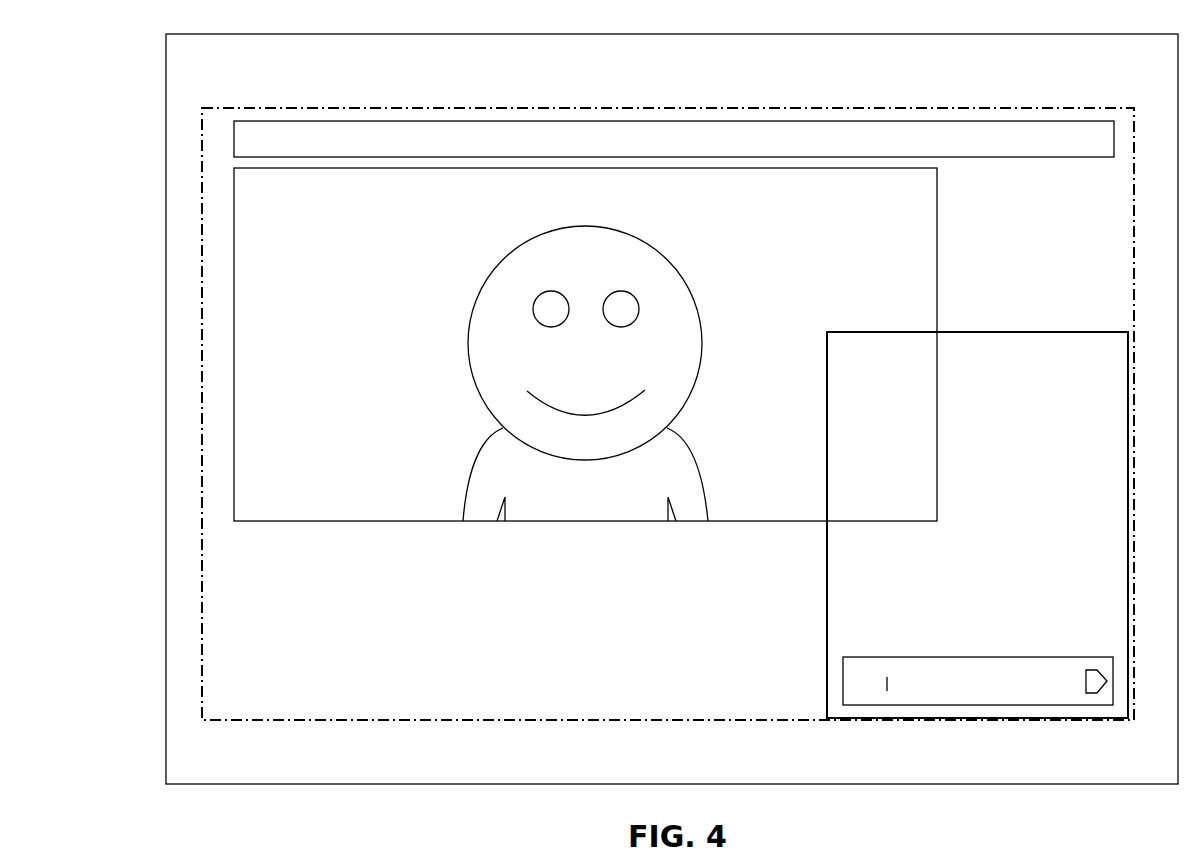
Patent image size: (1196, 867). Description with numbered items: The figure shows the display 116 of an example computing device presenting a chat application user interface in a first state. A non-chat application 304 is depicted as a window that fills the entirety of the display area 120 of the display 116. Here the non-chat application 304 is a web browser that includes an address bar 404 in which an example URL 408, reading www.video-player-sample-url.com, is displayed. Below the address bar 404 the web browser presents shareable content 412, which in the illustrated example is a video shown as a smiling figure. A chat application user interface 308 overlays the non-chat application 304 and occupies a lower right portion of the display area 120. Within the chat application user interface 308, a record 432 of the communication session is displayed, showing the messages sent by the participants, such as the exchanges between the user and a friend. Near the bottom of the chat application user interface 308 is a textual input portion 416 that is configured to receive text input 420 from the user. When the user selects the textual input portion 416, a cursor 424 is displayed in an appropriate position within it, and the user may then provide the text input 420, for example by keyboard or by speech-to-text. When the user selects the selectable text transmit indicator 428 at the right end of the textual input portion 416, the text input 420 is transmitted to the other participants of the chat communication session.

The display 116 is at (1140, 784).
The display area 120 is at (668, 413).
The non-chat application 304 is at (775, 108).
The address bar 404 is at (674, 114).
The URL 408 is at (526, 140).
The shareable content 412 is at (937, 242).
The chat application user interface 308 is at (977, 520).
The record 432 is at (1000, 512).
The textual input portion 416 is at (974, 686).
The text input 420 is at (872, 668).
The cursor 424 is at (902, 683).
The selectable text transmit indicator 428 is at (1090, 694).